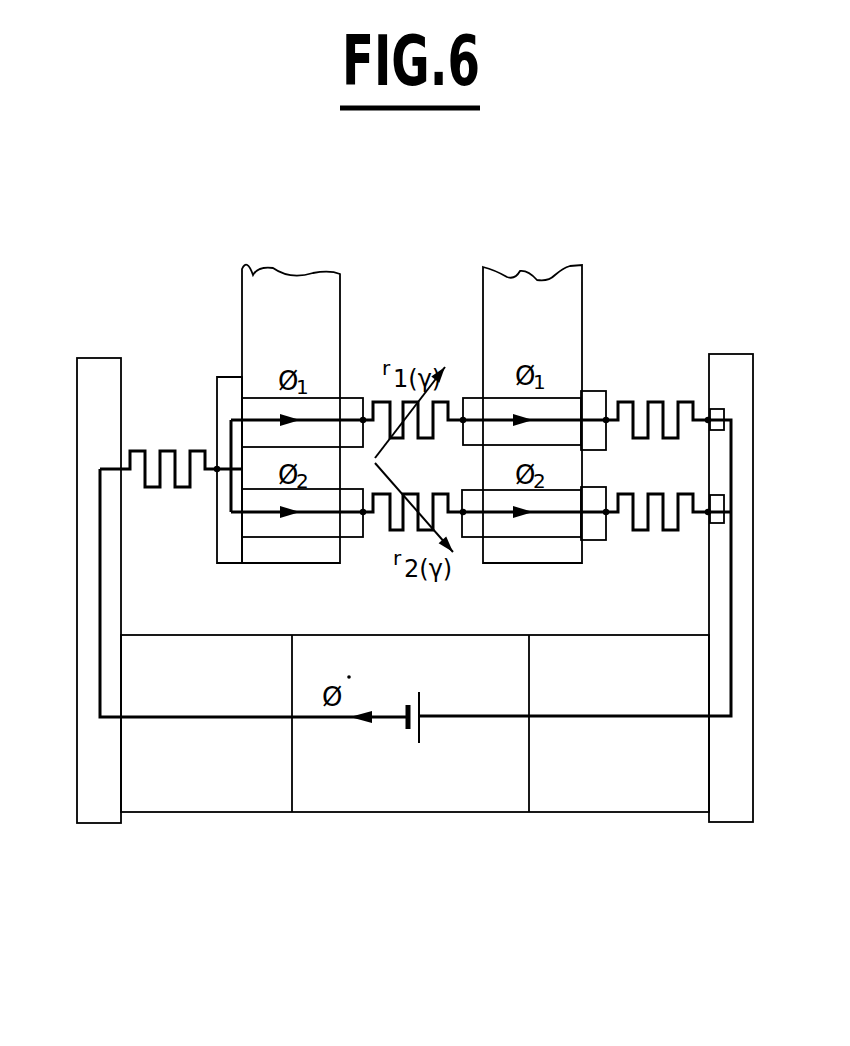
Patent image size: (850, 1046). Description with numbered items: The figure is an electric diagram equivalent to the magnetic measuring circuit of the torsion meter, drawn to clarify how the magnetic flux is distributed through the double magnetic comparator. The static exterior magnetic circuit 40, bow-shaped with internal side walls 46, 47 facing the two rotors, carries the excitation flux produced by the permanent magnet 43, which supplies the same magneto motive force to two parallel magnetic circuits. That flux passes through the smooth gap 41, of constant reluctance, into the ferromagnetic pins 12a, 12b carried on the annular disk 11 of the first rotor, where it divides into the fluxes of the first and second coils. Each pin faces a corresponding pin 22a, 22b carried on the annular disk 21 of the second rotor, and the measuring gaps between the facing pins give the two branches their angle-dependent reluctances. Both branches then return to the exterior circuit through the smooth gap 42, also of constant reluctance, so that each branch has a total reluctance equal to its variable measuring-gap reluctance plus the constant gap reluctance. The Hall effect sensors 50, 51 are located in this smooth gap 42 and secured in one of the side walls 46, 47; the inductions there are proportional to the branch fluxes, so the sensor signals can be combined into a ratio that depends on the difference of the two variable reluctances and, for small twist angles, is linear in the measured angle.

The annular disk 11 is at (269, 295).
The annular disk 21 is at (520, 270).
The magnetic pin 12b is at (225, 390).
The magnetic pin 12a is at (223, 537).
The magnetic pin 22b is at (597, 385).
The magnetic pin 22a is at (595, 530).
The smooth gap 41 is at (180, 532).
The smooth gap 42 is at (672, 475).
The Hall effect sensor 50 is at (724, 410).
The Hall effect sensor 51 is at (724, 523).
The internal side wall 46 is at (92, 807).
The internal side wall 47 is at (733, 743).
The permanent magnet 43 is at (420, 797).
The exterior magnetic circuit 40 is at (560, 827).